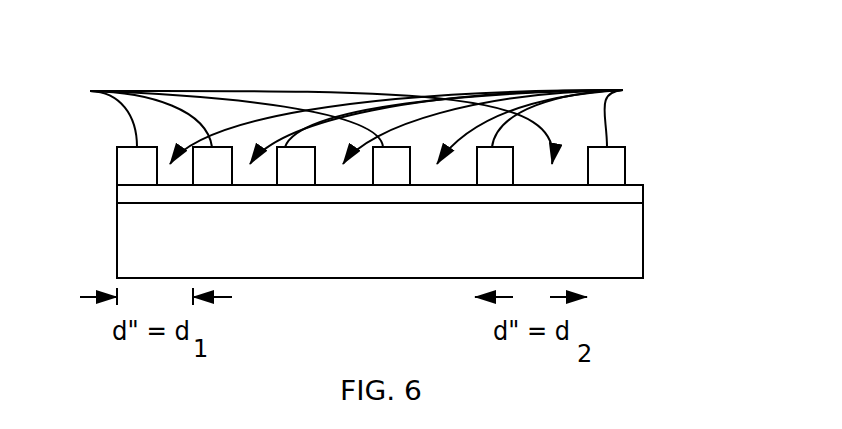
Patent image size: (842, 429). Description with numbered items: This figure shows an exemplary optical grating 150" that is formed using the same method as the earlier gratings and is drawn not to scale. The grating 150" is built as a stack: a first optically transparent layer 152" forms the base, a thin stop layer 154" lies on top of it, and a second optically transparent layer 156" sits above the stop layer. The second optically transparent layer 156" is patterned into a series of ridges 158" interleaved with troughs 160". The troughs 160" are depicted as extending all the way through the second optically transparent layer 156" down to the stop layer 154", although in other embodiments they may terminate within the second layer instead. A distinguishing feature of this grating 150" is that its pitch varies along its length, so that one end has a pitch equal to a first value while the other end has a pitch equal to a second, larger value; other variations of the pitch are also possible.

The optical grating 150 is at (410, 47).
The first optically transparent layer 152 is at (645, 237).
The stop layer 154 is at (644, 193).
The second optically transparent layer 156 is at (108, 167).
The ridges 158 is at (294, 119).
The troughs 160 is at (431, 118).